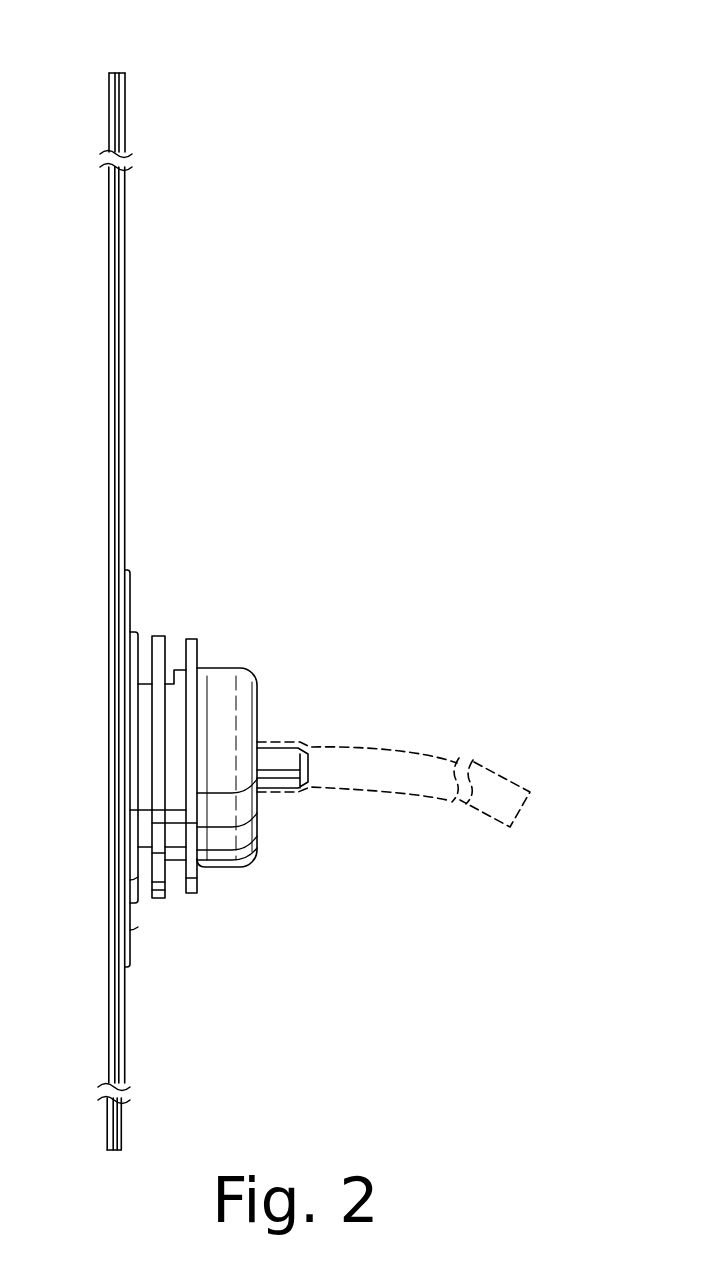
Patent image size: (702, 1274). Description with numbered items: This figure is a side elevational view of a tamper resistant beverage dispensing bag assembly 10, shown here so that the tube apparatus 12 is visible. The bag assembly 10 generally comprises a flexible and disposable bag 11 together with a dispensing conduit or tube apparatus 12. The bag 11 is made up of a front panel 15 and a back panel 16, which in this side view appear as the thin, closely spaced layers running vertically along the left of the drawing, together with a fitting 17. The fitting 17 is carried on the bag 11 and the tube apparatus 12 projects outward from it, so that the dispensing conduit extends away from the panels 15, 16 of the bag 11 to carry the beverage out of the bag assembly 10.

The bag assembly 10 is at (338, 94).
The bag 11 is at (131, 131).
The tube apparatus 12 is at (253, 662).
The front panel 15 is at (127, 300).
The back panel 16 is at (109, 232).
The fitting 17 is at (170, 900).